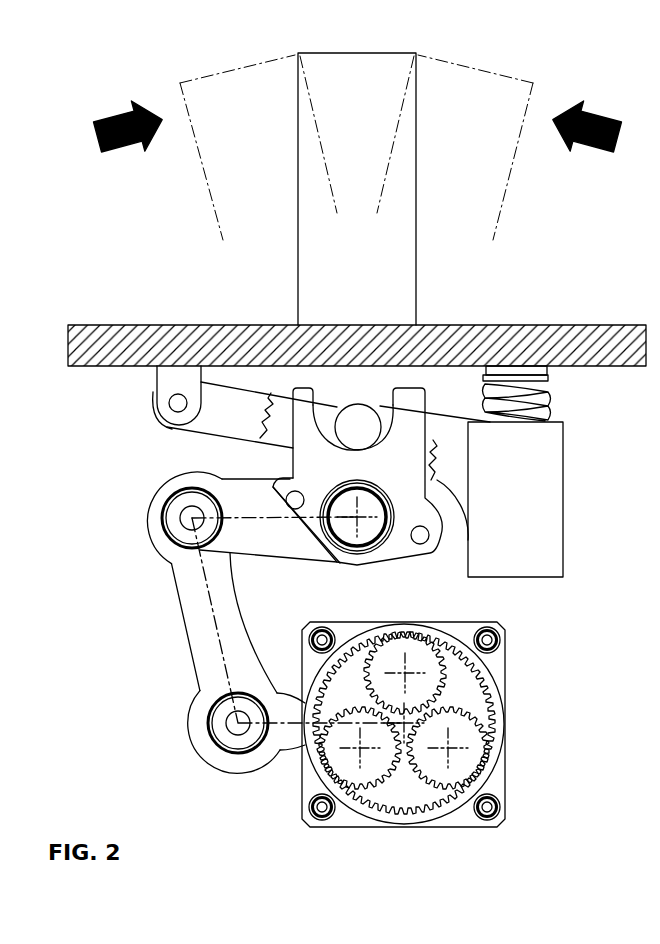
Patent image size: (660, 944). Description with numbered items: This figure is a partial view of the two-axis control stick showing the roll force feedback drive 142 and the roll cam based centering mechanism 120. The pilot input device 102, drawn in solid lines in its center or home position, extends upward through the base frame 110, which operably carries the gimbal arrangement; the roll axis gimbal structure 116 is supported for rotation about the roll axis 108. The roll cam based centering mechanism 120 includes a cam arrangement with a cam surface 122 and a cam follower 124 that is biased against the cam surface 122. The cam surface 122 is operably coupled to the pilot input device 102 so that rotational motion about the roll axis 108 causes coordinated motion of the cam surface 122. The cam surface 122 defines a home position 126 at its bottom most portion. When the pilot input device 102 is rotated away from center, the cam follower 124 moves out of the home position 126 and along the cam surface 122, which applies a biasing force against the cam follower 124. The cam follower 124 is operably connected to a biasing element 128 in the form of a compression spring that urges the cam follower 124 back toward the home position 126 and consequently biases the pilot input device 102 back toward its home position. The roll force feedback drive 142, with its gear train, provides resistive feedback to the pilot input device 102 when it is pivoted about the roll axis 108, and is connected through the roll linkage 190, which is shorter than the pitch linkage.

The pilot input device 102 is at (297, 285).
The roll axis 108 is at (357, 517).
The base frame 110 is at (100, 330).
The roll axis gimbal structure 116 is at (445, 551).
The roll cam based centering mechanism 120 is at (125, 470).
The cam surface 122 is at (328, 432).
The cam follower 124 is at (364, 404).
The home position 126 is at (378, 466).
The biasing element 128 is at (547, 388).
The roll force feedback drive 142 is at (521, 831).
The roll linkage 190 is at (207, 623).